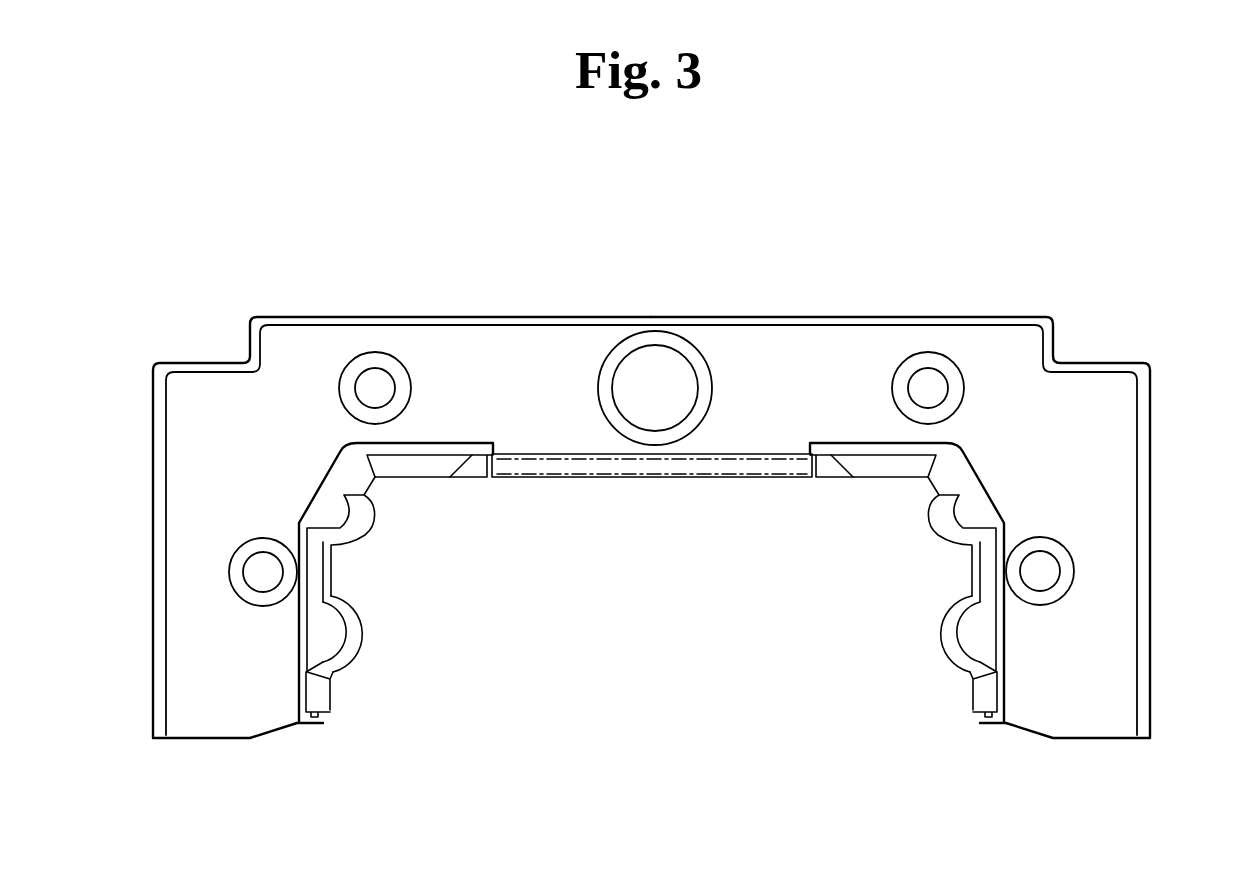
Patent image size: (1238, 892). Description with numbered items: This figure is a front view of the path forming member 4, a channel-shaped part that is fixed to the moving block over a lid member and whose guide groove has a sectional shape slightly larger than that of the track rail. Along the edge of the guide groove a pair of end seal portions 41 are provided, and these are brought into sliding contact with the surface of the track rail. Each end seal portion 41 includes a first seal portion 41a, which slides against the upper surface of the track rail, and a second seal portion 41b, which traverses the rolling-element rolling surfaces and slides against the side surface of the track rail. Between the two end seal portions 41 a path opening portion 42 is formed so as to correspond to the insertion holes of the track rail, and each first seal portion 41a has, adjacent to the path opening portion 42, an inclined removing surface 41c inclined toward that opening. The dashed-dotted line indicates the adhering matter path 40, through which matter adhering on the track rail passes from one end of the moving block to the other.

The path forming member 4 is at (447, 258).
The adhering matter path 40 is at (609, 478).
The end seal portion 41 is at (651, 586).
The first seal portion 41a is at (408, 460).
The second seal portion 41b is at (322, 638).
The inclined removing surface 41c is at (473, 470).
The path opening portion 42 is at (672, 455).